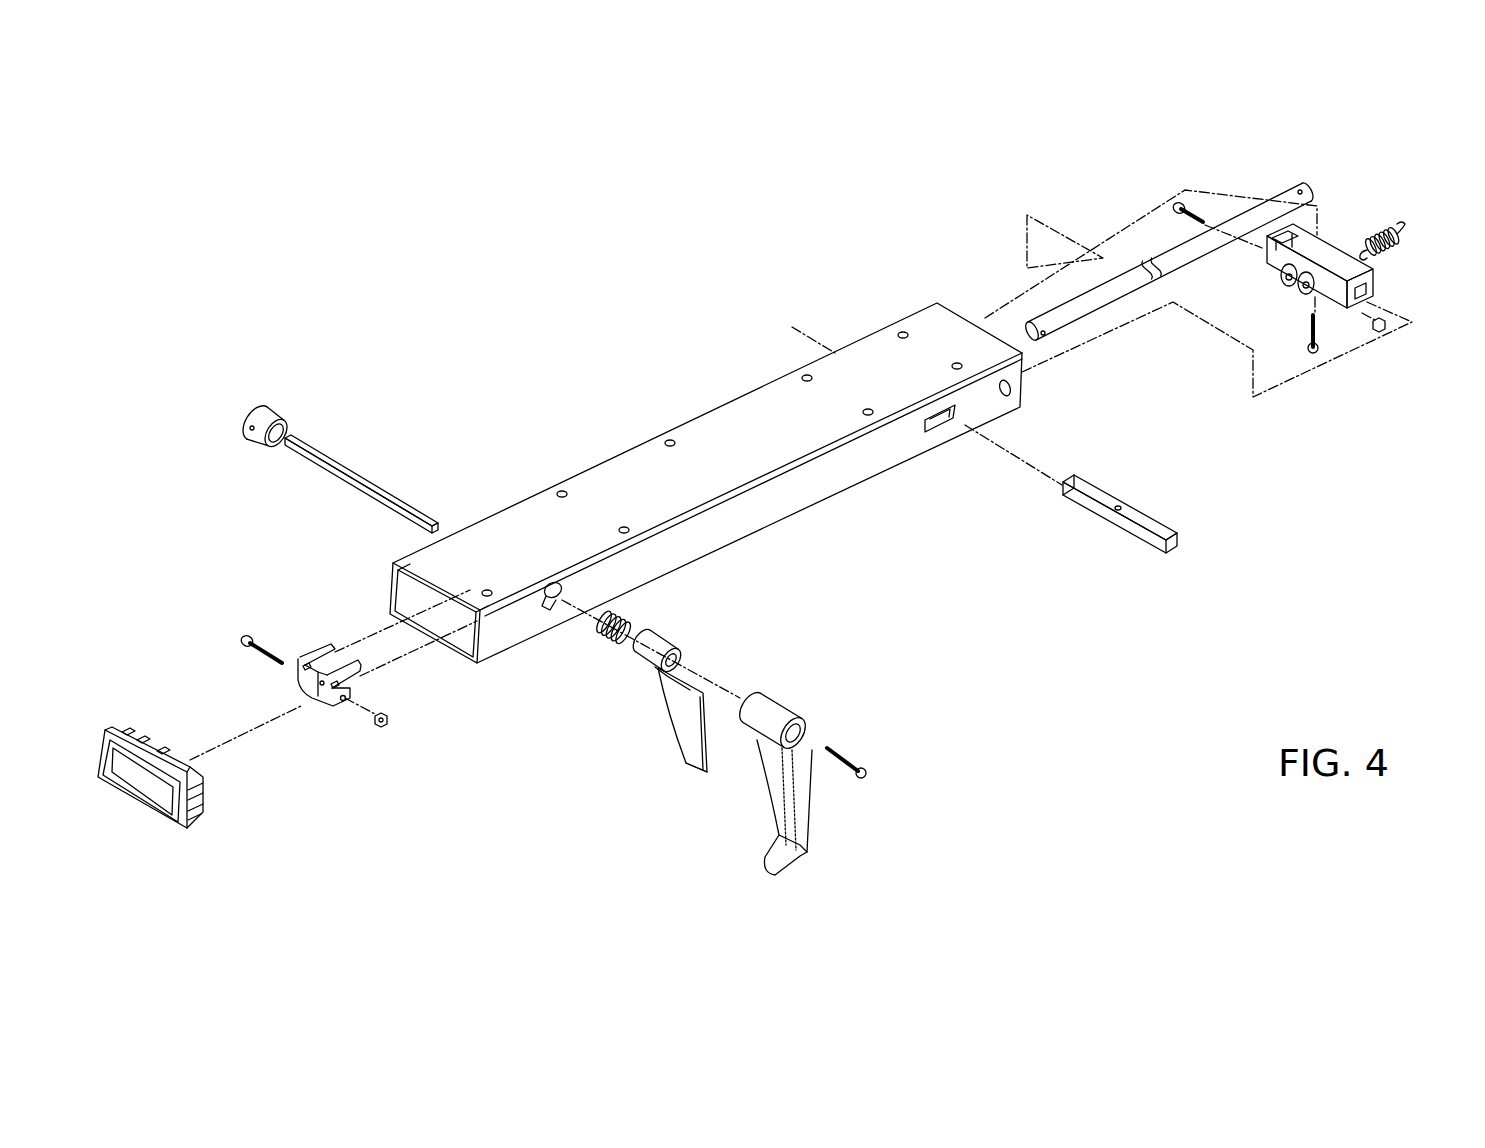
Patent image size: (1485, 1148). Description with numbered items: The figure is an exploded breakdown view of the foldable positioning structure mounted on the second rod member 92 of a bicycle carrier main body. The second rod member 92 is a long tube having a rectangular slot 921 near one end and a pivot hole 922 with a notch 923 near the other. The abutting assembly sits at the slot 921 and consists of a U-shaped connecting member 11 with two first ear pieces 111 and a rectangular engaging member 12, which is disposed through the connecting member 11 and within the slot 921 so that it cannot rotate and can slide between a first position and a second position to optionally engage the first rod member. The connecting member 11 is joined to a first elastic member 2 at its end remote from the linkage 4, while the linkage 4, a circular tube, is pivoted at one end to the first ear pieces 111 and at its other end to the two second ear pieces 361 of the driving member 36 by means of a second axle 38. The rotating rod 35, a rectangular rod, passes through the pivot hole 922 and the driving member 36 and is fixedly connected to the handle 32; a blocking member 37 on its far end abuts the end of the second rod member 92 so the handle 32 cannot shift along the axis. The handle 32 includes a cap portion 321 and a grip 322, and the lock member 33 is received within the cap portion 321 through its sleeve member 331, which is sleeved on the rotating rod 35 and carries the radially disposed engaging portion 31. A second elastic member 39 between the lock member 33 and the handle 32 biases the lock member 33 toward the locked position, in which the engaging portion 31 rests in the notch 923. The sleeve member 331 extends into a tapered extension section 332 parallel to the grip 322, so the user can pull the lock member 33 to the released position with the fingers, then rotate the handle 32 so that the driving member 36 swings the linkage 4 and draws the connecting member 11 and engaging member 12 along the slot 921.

The first elastic member 2 is at (1386, 229).
The linkage 4 is at (1268, 210).
The connecting member 11 is at (1376, 280).
The first ear pieces 111 is at (1310, 268).
The engaging member 12 is at (1142, 520).
The engaging portion 31 is at (655, 668).
The handle 32 is at (833, 848).
The cap portion 321 is at (777, 708).
The grip 322 is at (800, 797).
The lock member 33 is at (724, 660).
The sleeve member 331 is at (660, 645).
The extension section 332 is at (706, 768).
The rotating rod 35 is at (358, 470).
The driving member 36 is at (332, 711).
The second ear pieces 361 is at (343, 700).
The blocking member 37 is at (270, 405).
The second axle 38 is at (245, 645).
The second elastic member 39 is at (628, 622).
The second rod member 92 is at (748, 405).
The slot 921 is at (932, 430).
The pivot hole 922 is at (543, 600).
The notch 923 is at (550, 608).